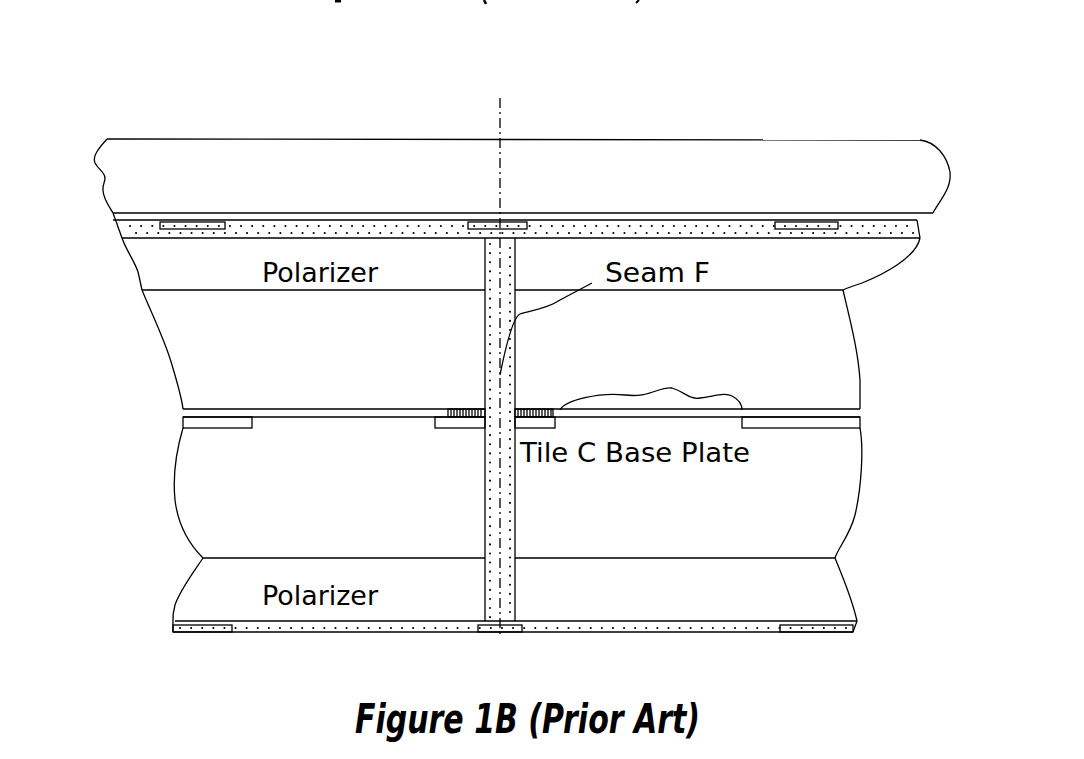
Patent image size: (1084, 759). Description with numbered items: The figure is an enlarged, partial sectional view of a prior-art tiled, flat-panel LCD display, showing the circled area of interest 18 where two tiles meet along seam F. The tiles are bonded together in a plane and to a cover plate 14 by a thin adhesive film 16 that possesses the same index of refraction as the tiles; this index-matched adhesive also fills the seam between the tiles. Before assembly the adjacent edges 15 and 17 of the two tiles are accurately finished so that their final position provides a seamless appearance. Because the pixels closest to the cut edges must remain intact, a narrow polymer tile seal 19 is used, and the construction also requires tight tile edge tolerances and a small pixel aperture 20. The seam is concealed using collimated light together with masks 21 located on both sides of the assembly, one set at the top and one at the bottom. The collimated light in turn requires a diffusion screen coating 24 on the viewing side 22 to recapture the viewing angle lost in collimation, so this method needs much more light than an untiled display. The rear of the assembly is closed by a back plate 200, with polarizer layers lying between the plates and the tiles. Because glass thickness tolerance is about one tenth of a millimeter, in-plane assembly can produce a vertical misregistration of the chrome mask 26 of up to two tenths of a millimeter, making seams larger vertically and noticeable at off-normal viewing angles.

The cover plate 14 is at (388, 190).
The adjacent edge 15 is at (515, 372).
The adhesive film 16 is at (405, 228).
The adjacent edge 17 is at (486, 323).
The area of interest 18 is at (110, 415).
The polymer tile seal 19 is at (523, 408).
The pixel aperture 20 is at (684, 386).
The mask 21 is at (512, 222).
The viewing side 22 is at (848, 127).
The diffusion screen coating 24 is at (617, 184).
The chrome mask 26 is at (822, 429).
The back plate 200 is at (513, 650).